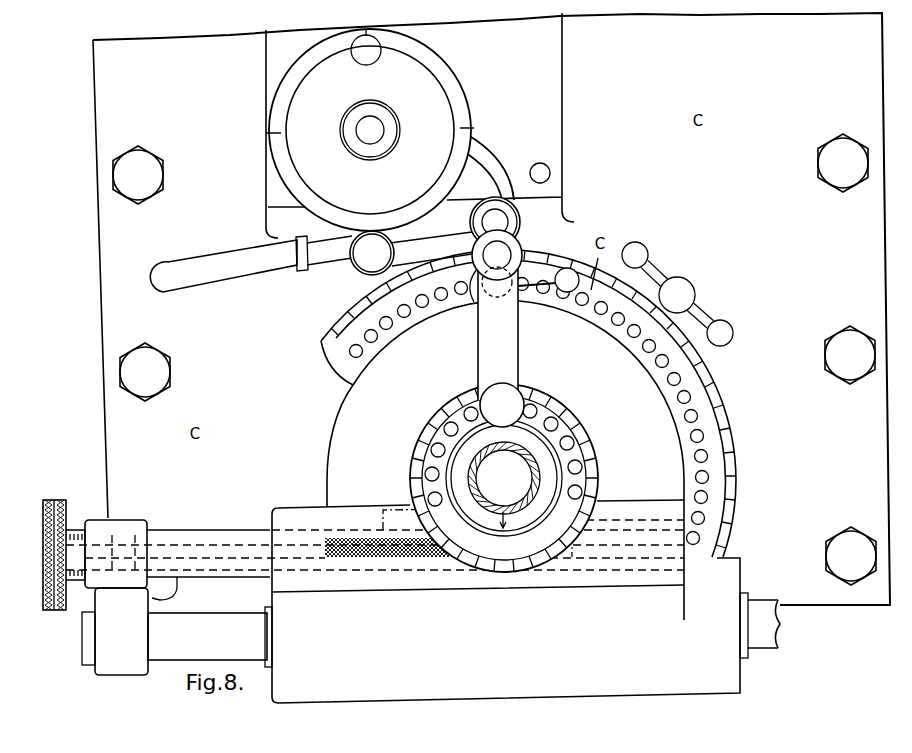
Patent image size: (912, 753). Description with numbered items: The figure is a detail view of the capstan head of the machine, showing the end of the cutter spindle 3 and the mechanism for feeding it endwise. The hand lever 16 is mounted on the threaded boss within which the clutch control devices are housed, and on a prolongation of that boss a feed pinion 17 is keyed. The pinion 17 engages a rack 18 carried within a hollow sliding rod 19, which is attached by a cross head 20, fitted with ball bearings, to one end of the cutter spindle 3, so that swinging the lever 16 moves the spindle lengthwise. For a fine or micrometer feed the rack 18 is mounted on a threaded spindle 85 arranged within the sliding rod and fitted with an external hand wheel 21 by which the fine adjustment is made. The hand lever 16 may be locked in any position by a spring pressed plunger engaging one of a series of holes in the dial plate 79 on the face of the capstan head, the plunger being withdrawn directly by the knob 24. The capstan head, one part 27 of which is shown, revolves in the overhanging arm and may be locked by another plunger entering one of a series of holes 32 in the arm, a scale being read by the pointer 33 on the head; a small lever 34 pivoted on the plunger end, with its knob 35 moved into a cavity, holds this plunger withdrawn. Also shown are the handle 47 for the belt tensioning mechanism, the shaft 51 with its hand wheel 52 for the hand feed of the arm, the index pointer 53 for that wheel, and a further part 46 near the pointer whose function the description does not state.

The cutter spindle 3 is at (789, 630).
The hand lever 16 is at (501, 352).
The feed pinion 17 is at (527, 480).
The rack 18 is at (397, 513).
The sliding rod 19 is at (245, 540).
The cross head 20 is at (124, 595).
The hand wheel 21 is at (65, 514).
The knob or milled head 24 is at (505, 404).
The capstan head part 27 is at (347, 410).
The holes 32 is at (704, 490).
The pointer 33 is at (499, 257).
The small lever 34 is at (566, 270).
The knob or enlargement 35 is at (478, 298).
The stud 46 is at (496, 222).
The handle 47 is at (255, 257).
The shaft 51 is at (371, 133).
The hand wheel 52 is at (450, 98).
The index pointer 53 is at (373, 240).
The disk or dial plate 79 is at (578, 450).
The threaded spindle 85 is at (378, 557).